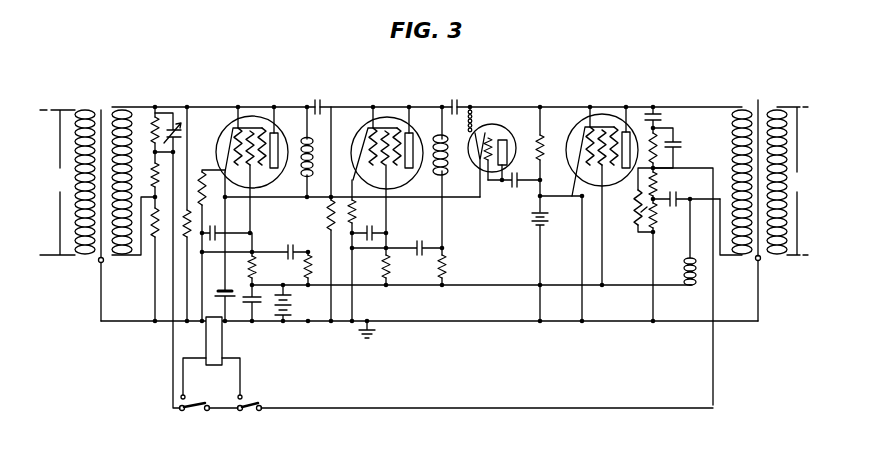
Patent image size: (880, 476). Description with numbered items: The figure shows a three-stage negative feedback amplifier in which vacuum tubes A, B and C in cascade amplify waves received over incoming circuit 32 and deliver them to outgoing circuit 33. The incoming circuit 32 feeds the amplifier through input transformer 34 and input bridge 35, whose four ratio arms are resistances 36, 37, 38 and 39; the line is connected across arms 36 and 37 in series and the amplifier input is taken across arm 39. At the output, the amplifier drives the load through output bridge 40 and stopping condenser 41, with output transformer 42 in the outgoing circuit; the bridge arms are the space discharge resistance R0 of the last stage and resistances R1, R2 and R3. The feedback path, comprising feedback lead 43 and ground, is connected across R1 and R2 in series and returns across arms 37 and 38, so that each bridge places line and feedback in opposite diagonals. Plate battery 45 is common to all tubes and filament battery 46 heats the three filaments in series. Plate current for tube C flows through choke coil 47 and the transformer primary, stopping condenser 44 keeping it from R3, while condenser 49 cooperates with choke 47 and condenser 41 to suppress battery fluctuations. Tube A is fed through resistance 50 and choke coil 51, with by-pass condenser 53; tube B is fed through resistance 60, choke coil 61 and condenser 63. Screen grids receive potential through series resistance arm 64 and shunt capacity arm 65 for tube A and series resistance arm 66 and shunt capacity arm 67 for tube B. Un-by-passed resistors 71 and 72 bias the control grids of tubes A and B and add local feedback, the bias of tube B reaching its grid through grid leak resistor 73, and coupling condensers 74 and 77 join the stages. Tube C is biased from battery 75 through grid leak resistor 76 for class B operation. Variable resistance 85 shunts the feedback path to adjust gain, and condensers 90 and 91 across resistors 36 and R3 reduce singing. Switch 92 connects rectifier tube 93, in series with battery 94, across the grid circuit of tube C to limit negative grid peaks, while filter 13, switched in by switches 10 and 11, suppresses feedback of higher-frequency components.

The switch 10 is at (194, 410).
The switch 11 is at (242, 410).
The filter 13 is at (223, 343).
The incoming line or circuit 32 is at (67, 182).
The outgoing line or circuit 33 is at (787, 181).
The input transformer 34 is at (102, 112).
The input bridge 35 is at (168, 283).
The resistance 36 is at (153, 118).
The resistance 37 is at (152, 171).
The resistance 38 is at (155, 240).
The resistance 39 is at (185, 240).
The output bridge 40 is at (650, 125).
The stopping condenser 41 is at (680, 198).
The output transformer 42 is at (762, 112).
The feedback lead 43 is at (512, 411).
The stopping condenser 44 is at (662, 118).
The plate battery 45 is at (289, 313).
The filament heating battery 46 is at (220, 290).
The choke coil 47 is at (683, 270).
The condenser 49 is at (257, 305).
The resistance 50 is at (309, 282).
The interstage coupling impedance or choke coil 51 is at (303, 172).
The condenser 53 is at (287, 248).
The resistance 60 is at (447, 268).
The choke coil 61 is at (444, 173).
The condenser 63 is at (423, 240).
The series resistance arm 64 is at (257, 268).
The shunt capacity arm 65 is at (217, 230).
The series resistance arm 66 is at (392, 268).
The shunt capacity arm 67 is at (374, 228).
The resistor 71 is at (202, 175).
The resistor 72 is at (361, 250).
The grid leak resistor 73 is at (328, 203).
The coupling condenser 74 is at (314, 105).
The battery 75 is at (536, 227).
The grid leak resistor 76 is at (539, 137).
The coupling condenser 77 is at (450, 105).
The variable resistance 85 is at (634, 216).
The condenser 90 is at (173, 125).
The condenser 91 is at (676, 144).
The switch 92 is at (474, 115).
The rectifier tube 93 is at (482, 186).
The battery 94 is at (519, 186).
The vacuum tube A is at (233, 130).
The vacuum tube B is at (366, 130).
The vacuum tube C is at (600, 115).
The space discharge path resistance R0 is at (603, 195).
The ratio arm resistance R1 is at (658, 212).
The ratio arm resistance R2 is at (665, 187).
The ratio arm resistance R3 is at (660, 159).